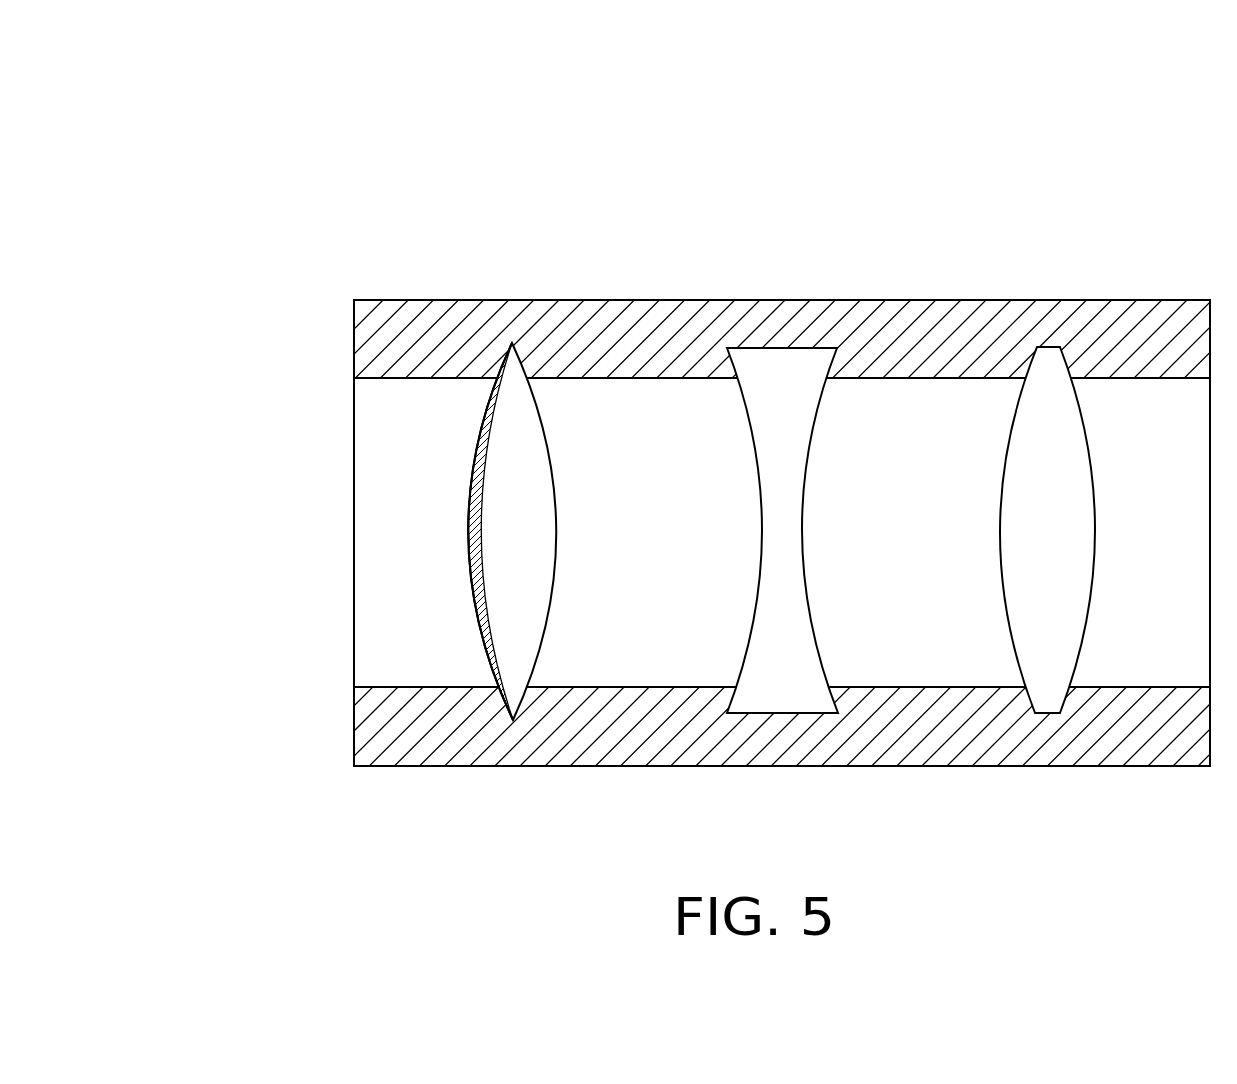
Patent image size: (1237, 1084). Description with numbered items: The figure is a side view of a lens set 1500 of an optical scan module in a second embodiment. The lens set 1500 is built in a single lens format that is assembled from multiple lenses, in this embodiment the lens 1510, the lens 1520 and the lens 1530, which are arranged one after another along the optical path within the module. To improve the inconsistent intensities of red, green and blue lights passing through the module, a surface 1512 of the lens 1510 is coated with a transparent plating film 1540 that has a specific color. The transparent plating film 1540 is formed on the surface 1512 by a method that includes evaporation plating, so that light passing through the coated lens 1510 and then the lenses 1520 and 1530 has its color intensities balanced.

The lens set 1500 is at (1083, 138).
The lens 1510 is at (520, 400).
The surface 1512 is at (482, 543).
The lens 1520 is at (778, 398).
The lens 1530 is at (1045, 398).
The transparent plating film 1540 is at (477, 607).